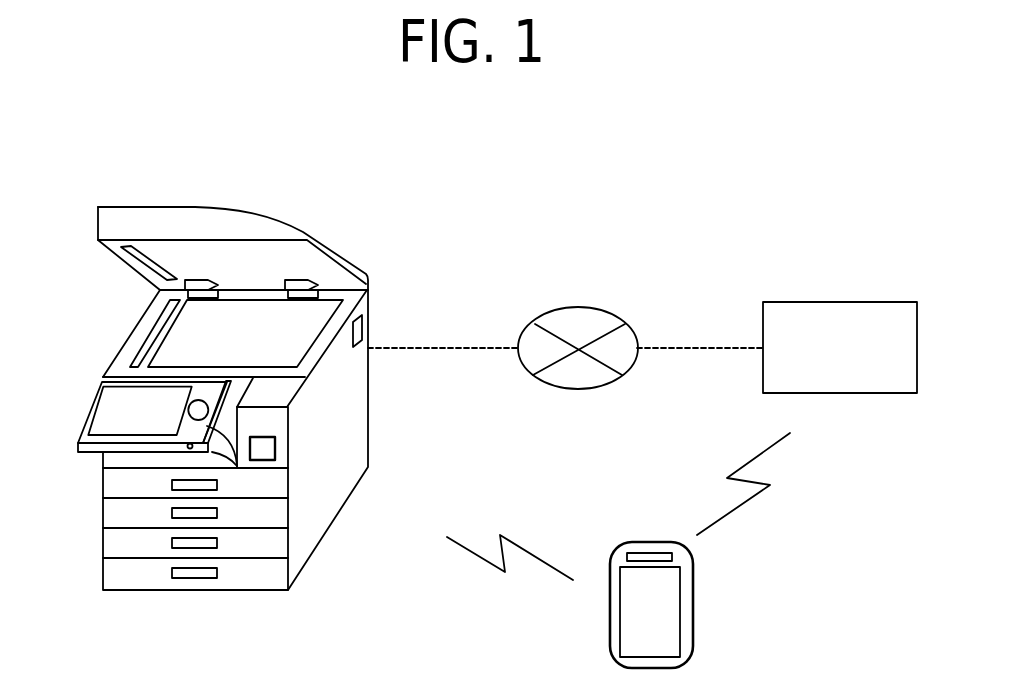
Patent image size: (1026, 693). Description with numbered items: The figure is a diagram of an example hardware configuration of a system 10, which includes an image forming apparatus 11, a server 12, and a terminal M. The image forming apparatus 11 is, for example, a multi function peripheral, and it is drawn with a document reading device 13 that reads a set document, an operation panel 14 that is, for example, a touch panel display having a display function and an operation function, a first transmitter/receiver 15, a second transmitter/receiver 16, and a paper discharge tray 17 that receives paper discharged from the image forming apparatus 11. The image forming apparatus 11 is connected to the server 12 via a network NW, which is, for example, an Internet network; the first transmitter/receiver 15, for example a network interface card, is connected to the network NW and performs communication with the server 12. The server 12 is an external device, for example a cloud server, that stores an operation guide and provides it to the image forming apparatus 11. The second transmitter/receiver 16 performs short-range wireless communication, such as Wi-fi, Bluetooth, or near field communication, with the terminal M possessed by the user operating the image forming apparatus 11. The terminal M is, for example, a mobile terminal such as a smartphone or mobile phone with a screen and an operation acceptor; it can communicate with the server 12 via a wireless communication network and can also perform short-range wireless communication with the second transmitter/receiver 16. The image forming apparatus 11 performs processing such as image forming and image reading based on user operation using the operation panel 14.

The system 10 is at (698, 168).
The image forming apparatus 11 is at (323, 249).
The server 12 is at (863, 302).
The document reading device 13 is at (180, 345).
The operation panel 14 is at (117, 422).
The first transmitter/receiver 15 is at (347, 396).
The second transmitter/receiver 16 is at (276, 450).
The paper discharge tray 17 is at (237, 442).
The network NW is at (593, 310).
The terminal M is at (693, 611).